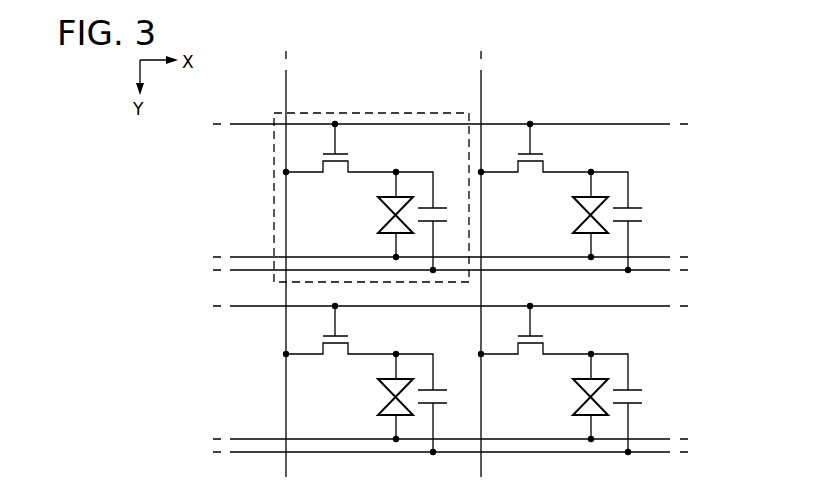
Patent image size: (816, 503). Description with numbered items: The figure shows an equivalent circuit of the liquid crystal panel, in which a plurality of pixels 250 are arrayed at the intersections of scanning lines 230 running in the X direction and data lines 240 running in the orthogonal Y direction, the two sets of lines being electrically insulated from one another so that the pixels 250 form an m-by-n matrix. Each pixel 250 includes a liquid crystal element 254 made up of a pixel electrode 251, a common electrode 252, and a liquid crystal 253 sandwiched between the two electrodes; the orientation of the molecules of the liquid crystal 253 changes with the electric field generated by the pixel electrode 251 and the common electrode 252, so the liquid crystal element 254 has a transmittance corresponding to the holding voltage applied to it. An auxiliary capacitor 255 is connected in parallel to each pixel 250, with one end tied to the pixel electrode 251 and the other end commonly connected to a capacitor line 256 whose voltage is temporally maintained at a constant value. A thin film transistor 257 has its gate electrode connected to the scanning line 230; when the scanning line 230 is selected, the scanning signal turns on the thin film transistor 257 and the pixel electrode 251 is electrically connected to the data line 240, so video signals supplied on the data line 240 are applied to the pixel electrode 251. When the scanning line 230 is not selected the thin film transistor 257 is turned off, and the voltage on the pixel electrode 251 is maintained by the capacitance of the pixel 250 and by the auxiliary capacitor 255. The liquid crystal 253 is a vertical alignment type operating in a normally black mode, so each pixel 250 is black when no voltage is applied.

The scanning line 230 is at (261, 123).
The data line 240 is at (287, 98).
The pixel 250 is at (365, 112).
The pixel electrode 251 is at (392, 196).
The common electrode 252 is at (253, 257).
The liquid crystal 253 is at (387, 208).
The liquid crystal element 254 is at (368, 230).
The auxiliary capacitor 255 is at (449, 199).
The capacitor line 256 is at (643, 272).
The thin film transistor 257 is at (352, 159).